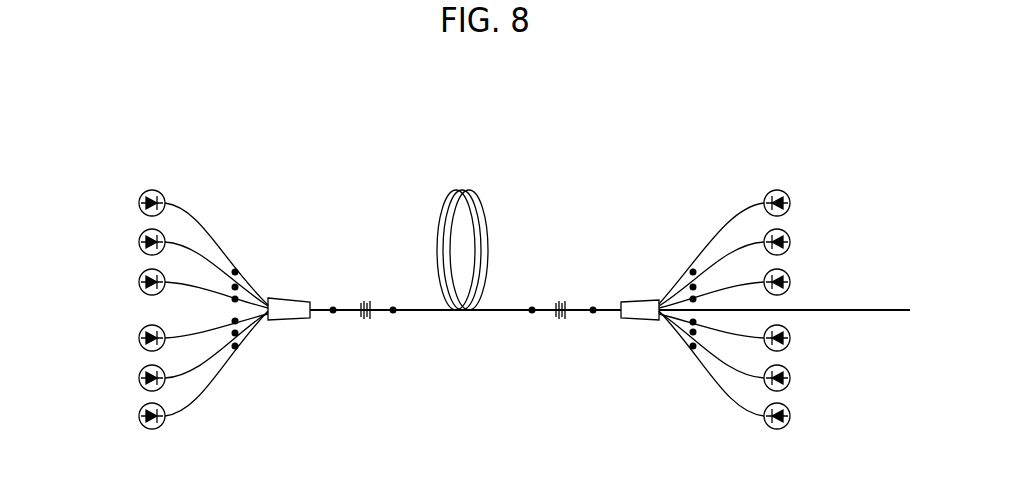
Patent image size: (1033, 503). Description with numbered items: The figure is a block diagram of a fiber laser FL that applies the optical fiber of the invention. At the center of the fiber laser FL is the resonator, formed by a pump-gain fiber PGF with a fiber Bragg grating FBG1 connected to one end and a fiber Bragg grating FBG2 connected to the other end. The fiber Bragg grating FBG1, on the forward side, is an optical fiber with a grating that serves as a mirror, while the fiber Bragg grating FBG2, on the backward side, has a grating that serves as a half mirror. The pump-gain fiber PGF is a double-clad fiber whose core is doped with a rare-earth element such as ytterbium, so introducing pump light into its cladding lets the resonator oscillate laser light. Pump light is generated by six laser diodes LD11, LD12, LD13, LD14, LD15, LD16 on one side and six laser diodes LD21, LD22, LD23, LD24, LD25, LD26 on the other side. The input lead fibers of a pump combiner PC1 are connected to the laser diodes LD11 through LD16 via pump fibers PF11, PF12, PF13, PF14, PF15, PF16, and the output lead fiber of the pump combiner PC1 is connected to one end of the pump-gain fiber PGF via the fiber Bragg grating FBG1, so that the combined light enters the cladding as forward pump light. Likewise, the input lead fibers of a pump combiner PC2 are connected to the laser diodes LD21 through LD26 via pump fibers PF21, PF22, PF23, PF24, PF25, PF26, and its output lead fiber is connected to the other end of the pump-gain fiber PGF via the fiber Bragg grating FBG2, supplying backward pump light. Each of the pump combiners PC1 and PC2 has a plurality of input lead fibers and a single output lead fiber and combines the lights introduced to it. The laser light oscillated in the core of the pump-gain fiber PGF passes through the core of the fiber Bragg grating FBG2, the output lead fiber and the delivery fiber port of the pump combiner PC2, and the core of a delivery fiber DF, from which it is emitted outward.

The fiber laser FL is at (789, 117).
The laser diode LD11 is at (139, 203).
The laser diode LD12 is at (139, 242).
The laser diode LD13 is at (139, 282).
The laser diode LD14 is at (139, 338).
The laser diode LD15 is at (139, 378).
The laser diode LD16 is at (139, 416).
The laser diode LD21 is at (790, 203).
The laser diode LD22 is at (790, 242).
The laser diode LD23 is at (790, 282).
The laser diode LD24 is at (790, 338).
The laser diode LD25 is at (790, 378).
The laser diode LD26 is at (790, 416).
The pump fiber PF11 is at (185, 212).
The pump fiber PF12 is at (183, 247).
The pump fiber PF13 is at (183, 283).
The pump fiber PF14 is at (183, 338).
The pump fiber PF15 is at (183, 370).
The pump fiber PF16 is at (185, 407).
The pump fiber PF21 is at (748, 211).
The pump fiber PF22 is at (746, 250).
The pump fiber PF23 is at (748, 283).
The pump fiber PF24 is at (748, 338).
The pump fiber PF25 is at (745, 372).
The pump fiber PF26 is at (747, 410).
The pump combiner PC1 is at (285, 296).
The pump combiner PC2 is at (636, 296).
The fiber Bragg grating FBG1 is at (366, 318).
The fiber Bragg grating FBG2 is at (562, 318).
The pump-gain fiber PGF is at (460, 189).
The delivery fiber DF is at (898, 312).